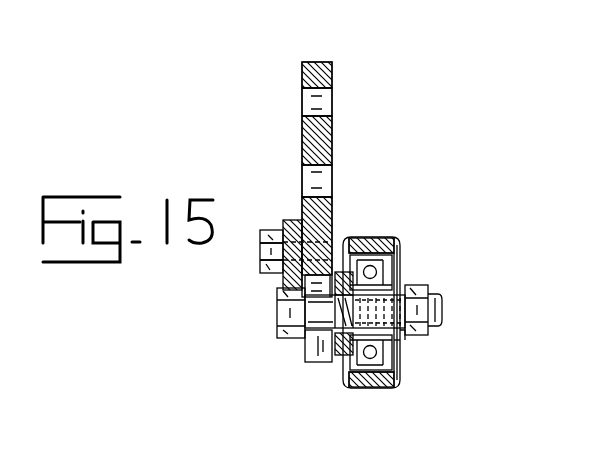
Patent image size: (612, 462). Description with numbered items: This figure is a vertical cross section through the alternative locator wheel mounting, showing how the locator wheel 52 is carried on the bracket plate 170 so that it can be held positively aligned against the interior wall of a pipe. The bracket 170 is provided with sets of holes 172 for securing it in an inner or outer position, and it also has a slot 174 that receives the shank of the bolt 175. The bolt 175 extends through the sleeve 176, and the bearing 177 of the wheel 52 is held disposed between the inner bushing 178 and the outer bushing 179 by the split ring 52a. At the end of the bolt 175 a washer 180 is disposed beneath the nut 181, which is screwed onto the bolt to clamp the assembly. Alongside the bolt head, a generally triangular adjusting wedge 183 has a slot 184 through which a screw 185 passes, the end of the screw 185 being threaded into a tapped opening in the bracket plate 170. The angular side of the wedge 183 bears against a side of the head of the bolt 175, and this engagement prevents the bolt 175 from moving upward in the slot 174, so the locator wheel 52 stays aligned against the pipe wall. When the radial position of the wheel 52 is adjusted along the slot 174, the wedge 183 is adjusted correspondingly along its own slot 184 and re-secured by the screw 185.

The locator wheel 52 is at (385, 238).
The split ring 52a is at (397, 252).
The bracket plate 170 is at (312, 62).
The holes 172 is at (302, 108).
The slot 174 is at (305, 352).
The bolt 175 is at (277, 331).
The sleeve 176 is at (400, 340).
The bearing 177 is at (405, 266).
The inner bushing 178 is at (340, 360).
The outer bushing 179 is at (408, 282).
The washer 180 is at (405, 338).
The nut 181 is at (430, 333).
The adjusting wedge 183 is at (293, 220).
The slot 184 is at (268, 262).
The screw 185 is at (268, 273).